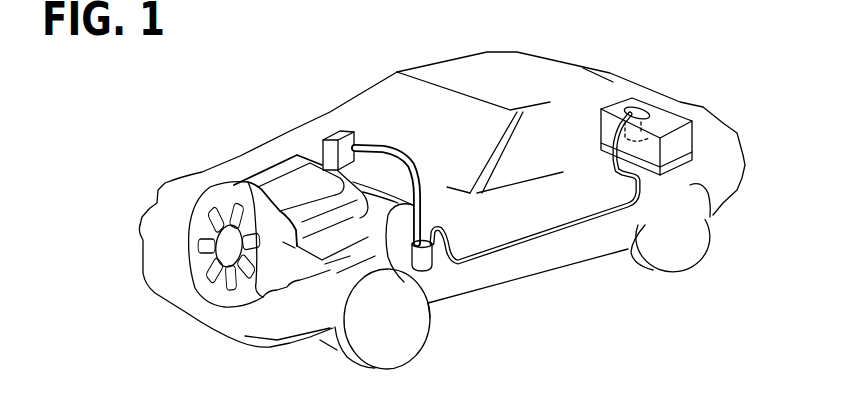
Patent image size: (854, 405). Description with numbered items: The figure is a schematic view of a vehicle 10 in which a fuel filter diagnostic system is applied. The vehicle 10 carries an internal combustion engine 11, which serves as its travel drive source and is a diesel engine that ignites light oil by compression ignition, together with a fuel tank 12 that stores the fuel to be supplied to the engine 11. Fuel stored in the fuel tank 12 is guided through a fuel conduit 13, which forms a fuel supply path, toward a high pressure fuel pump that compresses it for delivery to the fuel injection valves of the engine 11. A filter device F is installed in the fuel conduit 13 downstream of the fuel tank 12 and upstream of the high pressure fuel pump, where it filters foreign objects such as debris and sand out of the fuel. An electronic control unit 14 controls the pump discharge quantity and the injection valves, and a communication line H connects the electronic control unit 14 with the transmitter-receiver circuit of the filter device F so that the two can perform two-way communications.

The vehicle 10 is at (348, 101).
The internal combustion engine 11 is at (250, 181).
The fuel tank 12 is at (687, 103).
The fuel conduit 13 is at (561, 225).
The electronic control unit 14 is at (335, 132).
The communication line H is at (380, 153).
The filter device F is at (432, 270).